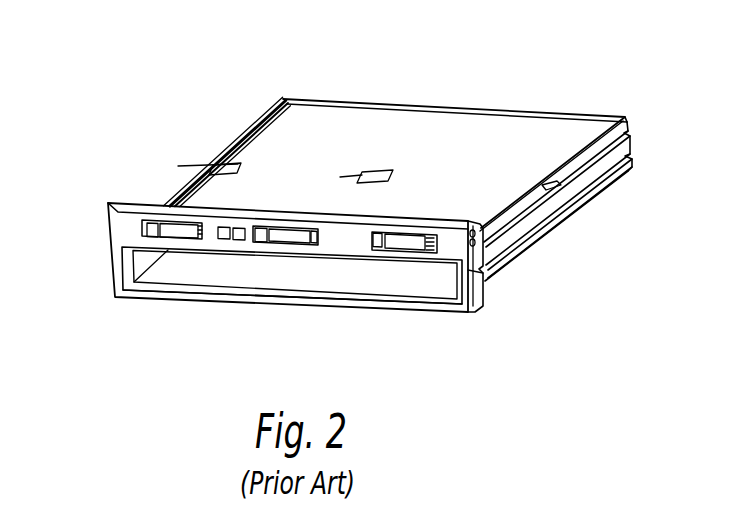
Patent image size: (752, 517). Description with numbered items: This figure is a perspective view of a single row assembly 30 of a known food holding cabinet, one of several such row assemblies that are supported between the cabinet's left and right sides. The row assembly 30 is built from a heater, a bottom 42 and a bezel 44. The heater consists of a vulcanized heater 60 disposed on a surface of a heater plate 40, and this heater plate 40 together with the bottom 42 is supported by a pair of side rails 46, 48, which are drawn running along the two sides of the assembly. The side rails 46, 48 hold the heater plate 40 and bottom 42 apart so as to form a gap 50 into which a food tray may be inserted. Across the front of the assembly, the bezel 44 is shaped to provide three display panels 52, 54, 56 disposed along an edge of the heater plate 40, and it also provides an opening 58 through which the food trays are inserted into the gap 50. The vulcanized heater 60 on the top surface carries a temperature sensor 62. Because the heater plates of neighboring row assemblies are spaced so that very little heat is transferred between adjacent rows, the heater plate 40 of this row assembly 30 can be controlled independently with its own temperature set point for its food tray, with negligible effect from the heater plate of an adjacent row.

The row assembly 30 is at (505, 65).
The heater plate 40 is at (562, 120).
The bottom 42 is at (203, 277).
The bezel 44 is at (116, 229).
The side rail 46 is at (285, 98).
The side rail 48 is at (620, 117).
The gap 50 is at (393, 270).
The display panel 52 is at (407, 232).
The display panel 54 is at (294, 228).
The display panel 56 is at (188, 207).
The opening 58 is at (167, 262).
The vulcanized heater 60 is at (355, 118).
The temperature sensor 62 is at (382, 172).